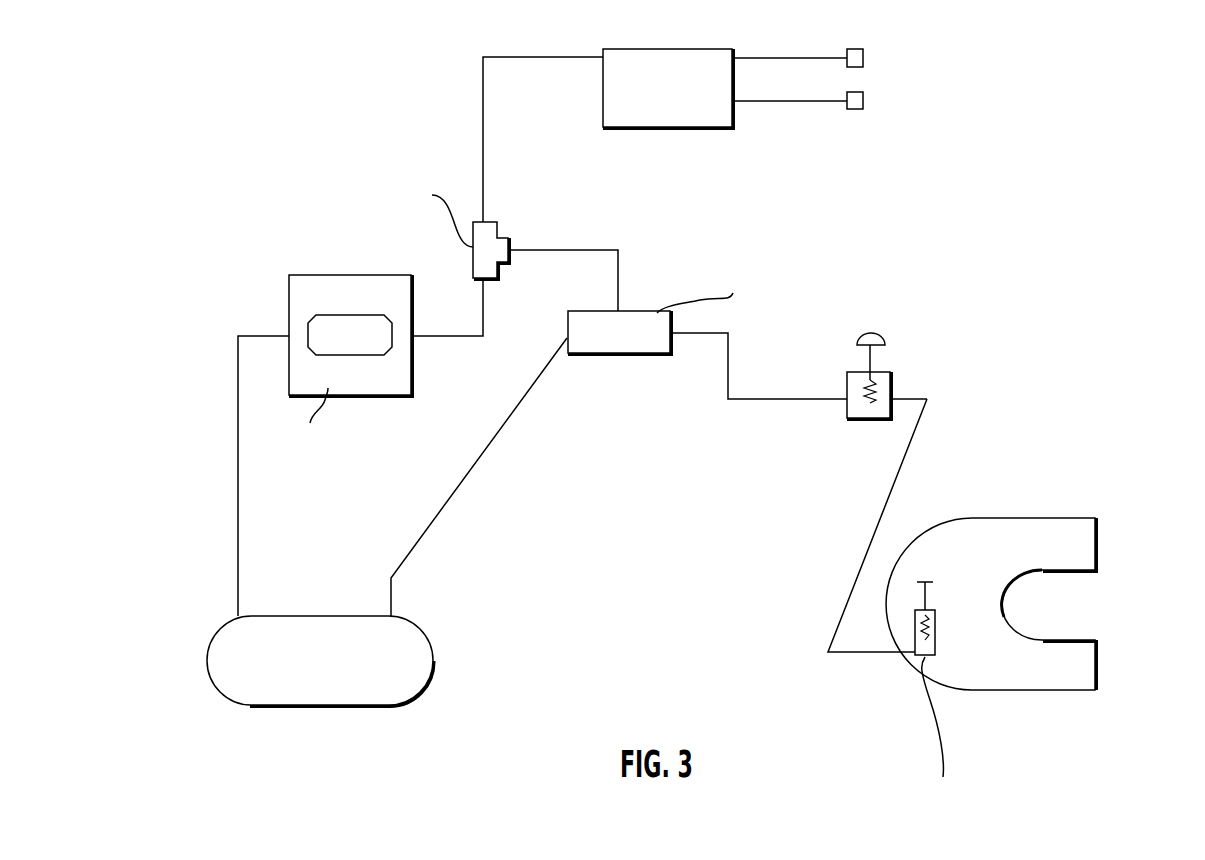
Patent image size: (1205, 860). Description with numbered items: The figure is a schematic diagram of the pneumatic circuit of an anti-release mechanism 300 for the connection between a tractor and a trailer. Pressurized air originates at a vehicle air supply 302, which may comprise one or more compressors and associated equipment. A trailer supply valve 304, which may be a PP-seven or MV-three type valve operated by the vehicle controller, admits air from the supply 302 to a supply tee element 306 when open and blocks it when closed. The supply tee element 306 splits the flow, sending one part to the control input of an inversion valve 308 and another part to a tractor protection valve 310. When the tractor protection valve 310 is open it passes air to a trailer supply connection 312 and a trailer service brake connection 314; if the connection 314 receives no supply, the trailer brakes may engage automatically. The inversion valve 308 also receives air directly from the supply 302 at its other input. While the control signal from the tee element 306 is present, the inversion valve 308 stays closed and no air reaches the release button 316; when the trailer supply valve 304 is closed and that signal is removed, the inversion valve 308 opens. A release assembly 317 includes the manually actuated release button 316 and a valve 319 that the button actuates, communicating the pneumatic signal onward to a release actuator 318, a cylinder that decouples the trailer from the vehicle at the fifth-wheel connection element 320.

The anti-release mechanism 300 is at (300, 115).
The vehicle air supply 302 is at (298, 705).
The trailer supply valve 304 is at (317, 280).
The supply tee element 306 is at (502, 238).
The inversion valve 308 is at (613, 353).
The tractor protection valve 310 is at (682, 101).
The trailer supply connection 312 is at (852, 68).
The trailer service brake connection 314 is at (852, 109).
The release button 316 is at (873, 333).
The release assembly 317 is at (855, 420).
The release actuator 318 is at (915, 643).
The valve 319 is at (890, 418).
The connection element 320 is at (983, 600).